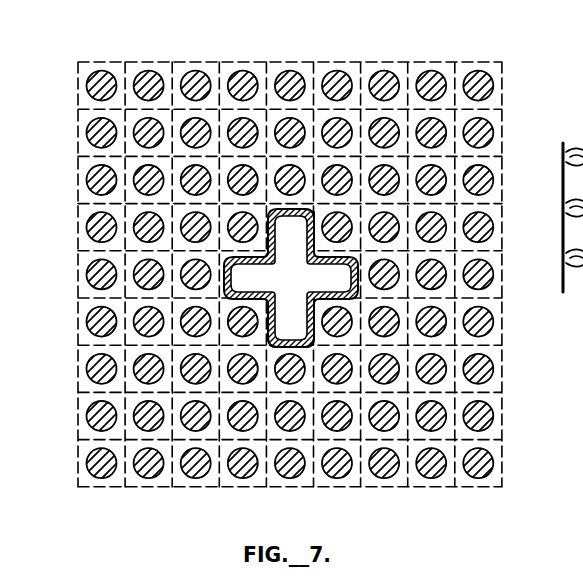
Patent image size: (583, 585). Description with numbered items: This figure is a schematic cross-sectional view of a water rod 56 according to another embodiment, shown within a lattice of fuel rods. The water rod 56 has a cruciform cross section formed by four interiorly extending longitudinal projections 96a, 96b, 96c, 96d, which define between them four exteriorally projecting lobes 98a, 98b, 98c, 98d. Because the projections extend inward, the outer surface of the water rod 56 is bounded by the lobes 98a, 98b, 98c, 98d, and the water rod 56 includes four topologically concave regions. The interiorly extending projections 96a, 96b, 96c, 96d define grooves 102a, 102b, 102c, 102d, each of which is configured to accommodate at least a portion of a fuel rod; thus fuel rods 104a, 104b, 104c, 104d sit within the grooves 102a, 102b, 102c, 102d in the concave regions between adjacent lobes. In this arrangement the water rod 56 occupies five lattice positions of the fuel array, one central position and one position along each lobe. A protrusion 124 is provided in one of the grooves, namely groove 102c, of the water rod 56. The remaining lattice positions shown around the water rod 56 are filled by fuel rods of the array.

The water rod 56 is at (358, 266).
The interiorly extending longitudinal projection 96a is at (316, 204).
The interiorly extending longitudinal projection 96b is at (312, 211).
The interiorly extending longitudinal projection 96c is at (270, 345).
The interiorly extending longitudinal projection 96d is at (296, 346).
The exteriorally projecting lobe 98a is at (291, 210).
The exteriorally projecting lobe 98b is at (319, 298).
The exteriorally projecting lobe 98c is at (284, 347).
The exteriorally projecting lobe 98d is at (222, 268).
The groove 102a is at (268, 242).
The groove 102b is at (313, 248).
The groove 102c is at (330, 336).
The groove 102d is at (262, 300).
The fuel rod 104a is at (254, 257).
The fuel rod 104b is at (315, 235).
The fuel rod 104c is at (326, 336).
The fuel rod 104d is at (268, 312).
The protrusion 124 is at (322, 306).